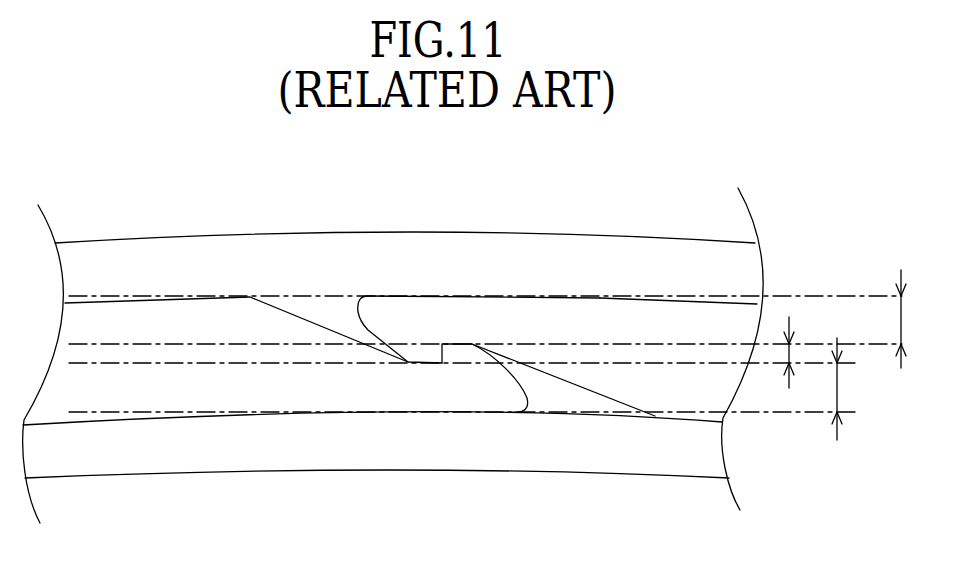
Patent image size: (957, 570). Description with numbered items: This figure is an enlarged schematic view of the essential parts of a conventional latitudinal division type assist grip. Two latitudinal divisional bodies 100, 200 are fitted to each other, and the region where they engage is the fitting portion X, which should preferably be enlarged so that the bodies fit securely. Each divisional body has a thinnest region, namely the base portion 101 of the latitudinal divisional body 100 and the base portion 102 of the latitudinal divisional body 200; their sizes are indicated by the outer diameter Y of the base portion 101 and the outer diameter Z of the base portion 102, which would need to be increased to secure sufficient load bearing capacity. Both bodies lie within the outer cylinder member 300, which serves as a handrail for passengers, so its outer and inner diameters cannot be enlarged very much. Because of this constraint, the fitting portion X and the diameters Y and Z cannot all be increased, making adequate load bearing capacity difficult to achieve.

The latitudinal divisional body 100 is at (170, 310).
The base portion 101 is at (425, 393).
The base portion 102 is at (447, 317).
The latitudinal divisional body 200 is at (650, 312).
The outer cylinder member 300 is at (405, 245).
The fitting portion X is at (790, 352).
The outer diameter of base portion Y is at (838, 385).
The outer diameter of base portion Z is at (898, 318).